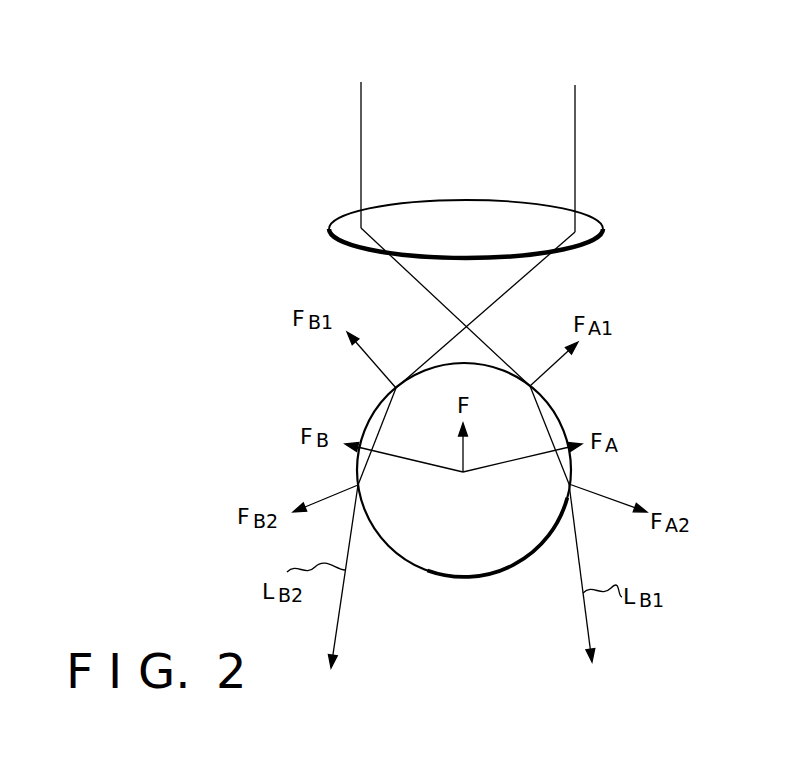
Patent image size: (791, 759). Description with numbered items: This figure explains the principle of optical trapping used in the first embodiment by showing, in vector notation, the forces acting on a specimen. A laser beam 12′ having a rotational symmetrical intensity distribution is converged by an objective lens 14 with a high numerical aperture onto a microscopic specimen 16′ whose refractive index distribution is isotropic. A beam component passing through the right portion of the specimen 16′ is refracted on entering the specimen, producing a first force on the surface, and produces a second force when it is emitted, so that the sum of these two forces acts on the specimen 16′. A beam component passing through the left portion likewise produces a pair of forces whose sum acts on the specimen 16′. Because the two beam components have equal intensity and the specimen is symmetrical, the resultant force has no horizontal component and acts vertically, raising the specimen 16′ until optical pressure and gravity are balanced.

The laser beam 12′ is at (558, 142).
The objective lens 14 is at (588, 227).
The microscopic specimen 16′ is at (552, 408).